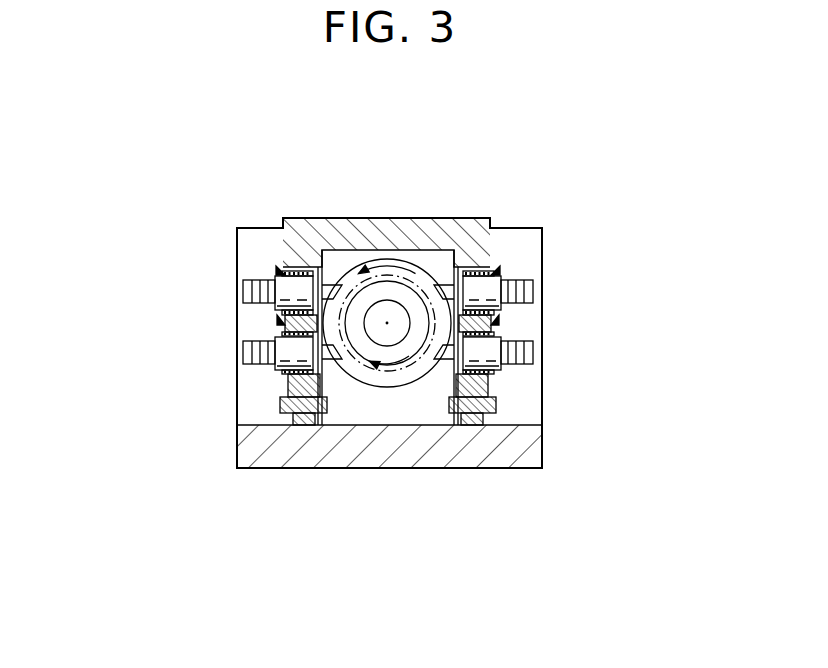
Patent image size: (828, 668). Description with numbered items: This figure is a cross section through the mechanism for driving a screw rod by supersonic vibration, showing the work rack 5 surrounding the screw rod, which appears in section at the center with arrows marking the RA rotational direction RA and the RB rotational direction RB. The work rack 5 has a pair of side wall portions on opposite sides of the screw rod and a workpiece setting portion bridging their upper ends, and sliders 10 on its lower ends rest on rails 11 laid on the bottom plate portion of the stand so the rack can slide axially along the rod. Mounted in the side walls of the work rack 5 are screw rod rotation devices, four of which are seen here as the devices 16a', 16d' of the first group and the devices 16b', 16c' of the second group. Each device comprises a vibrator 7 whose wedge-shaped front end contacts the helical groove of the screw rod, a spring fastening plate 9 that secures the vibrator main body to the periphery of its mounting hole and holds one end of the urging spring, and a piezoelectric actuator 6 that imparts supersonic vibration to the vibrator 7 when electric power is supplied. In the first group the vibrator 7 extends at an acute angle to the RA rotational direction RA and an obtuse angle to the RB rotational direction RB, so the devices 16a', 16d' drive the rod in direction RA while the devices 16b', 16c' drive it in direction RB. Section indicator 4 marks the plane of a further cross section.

The section line IV-IV 4 is at (82, 293).
The work rack 5 is at (392, 226).
The piezoelectric actuator 6 is at (243, 292).
The vibrator 7 is at (280, 282).
The spring fastening plate 9 is at (274, 272).
The slider 10 is at (328, 410).
The rail 11 is at (303, 425).
The screw rod rotation device 16a' is at (584, 224).
The screw rod rotation device 16b' is at (615, 392).
The screw rod rotation device 16c' is at (197, 203).
The screw rod rotation device 16d' is at (148, 424).
The RA rotational direction RA is at (420, 266).
The RB rotational direction RB is at (381, 364).